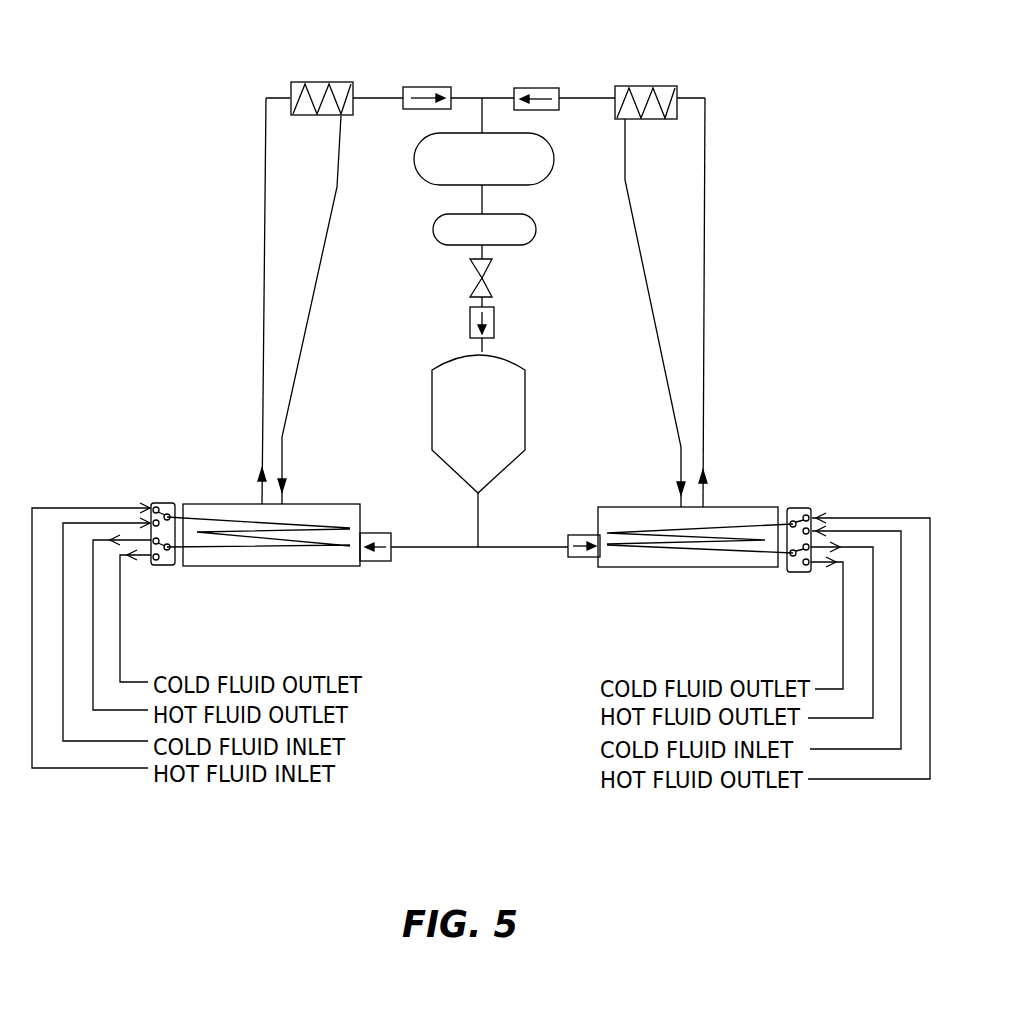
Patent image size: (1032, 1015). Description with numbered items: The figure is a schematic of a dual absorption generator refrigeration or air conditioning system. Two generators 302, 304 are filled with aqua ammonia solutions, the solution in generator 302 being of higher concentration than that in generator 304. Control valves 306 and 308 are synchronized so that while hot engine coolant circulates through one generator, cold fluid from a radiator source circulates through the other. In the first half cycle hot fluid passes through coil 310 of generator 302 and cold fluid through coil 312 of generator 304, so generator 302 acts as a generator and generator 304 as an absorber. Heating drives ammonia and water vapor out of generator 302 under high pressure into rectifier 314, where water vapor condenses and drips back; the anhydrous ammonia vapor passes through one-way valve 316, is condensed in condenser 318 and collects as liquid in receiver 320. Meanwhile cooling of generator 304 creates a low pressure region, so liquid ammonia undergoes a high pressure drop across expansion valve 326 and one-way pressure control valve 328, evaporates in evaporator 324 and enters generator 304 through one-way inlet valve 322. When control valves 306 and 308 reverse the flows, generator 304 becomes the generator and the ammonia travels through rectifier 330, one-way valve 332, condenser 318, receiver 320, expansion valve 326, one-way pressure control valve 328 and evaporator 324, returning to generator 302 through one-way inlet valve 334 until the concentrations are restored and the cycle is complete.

The generator 302 is at (322, 503).
The generator 304 is at (742, 507).
The control valve 306 is at (155, 503).
The control valve 308 is at (798, 508).
The coil 310 is at (223, 518).
The coil 312 is at (632, 532).
The rectifier 314 is at (313, 82).
The one-way valve 316 is at (423, 87).
The condenser 318 is at (554, 150).
The receiver 320 is at (523, 215).
The one-way inlet valve 322 is at (573, 533).
The evaporator 324 is at (523, 368).
The expansion valve 326 is at (485, 272).
The one-way pressure control valve 328 is at (496, 317).
The rectifier 330 is at (645, 86).
The one-way valve 332 is at (532, 88).
The one-way inlet valve 334 is at (373, 532).